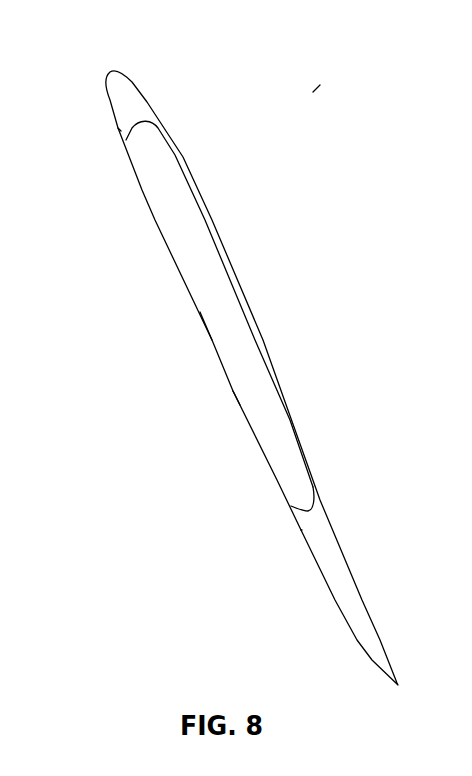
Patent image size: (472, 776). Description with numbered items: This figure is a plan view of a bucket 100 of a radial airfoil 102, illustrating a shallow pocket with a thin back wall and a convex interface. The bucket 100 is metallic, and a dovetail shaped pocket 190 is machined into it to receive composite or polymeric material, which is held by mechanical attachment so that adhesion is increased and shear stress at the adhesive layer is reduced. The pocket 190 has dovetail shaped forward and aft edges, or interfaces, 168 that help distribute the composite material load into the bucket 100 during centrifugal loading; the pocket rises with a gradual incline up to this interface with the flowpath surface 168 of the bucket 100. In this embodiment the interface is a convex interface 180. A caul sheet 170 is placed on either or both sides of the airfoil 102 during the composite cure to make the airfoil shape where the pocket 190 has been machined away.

The bucket 100 is at (147, 102).
The radial airfoil 102 is at (313, 92).
The flowpath surface 168 is at (126, 134).
The caul sheet 170 is at (233, 391).
The convex interface 180 is at (126, 140).
The dovetail shaped pocket 190 is at (210, 310).